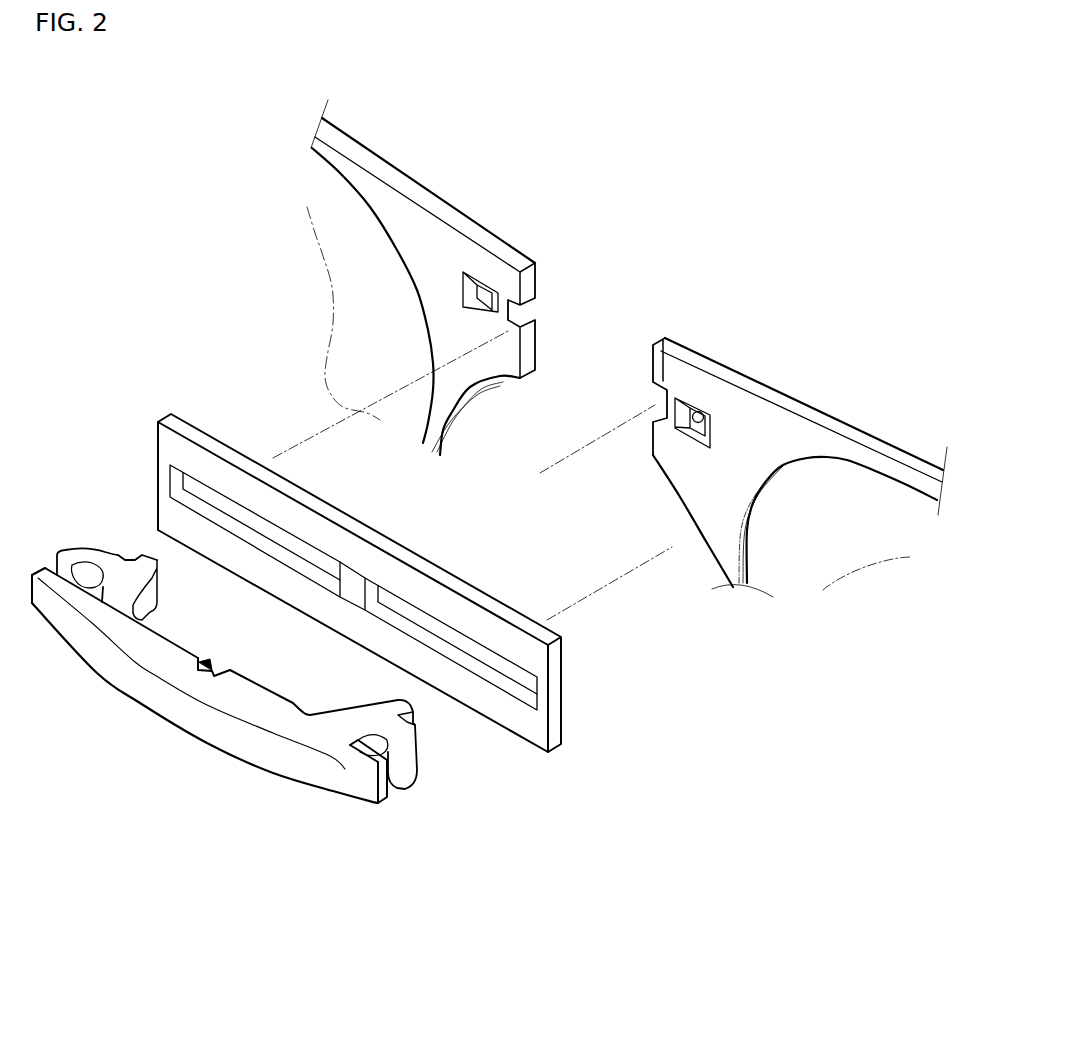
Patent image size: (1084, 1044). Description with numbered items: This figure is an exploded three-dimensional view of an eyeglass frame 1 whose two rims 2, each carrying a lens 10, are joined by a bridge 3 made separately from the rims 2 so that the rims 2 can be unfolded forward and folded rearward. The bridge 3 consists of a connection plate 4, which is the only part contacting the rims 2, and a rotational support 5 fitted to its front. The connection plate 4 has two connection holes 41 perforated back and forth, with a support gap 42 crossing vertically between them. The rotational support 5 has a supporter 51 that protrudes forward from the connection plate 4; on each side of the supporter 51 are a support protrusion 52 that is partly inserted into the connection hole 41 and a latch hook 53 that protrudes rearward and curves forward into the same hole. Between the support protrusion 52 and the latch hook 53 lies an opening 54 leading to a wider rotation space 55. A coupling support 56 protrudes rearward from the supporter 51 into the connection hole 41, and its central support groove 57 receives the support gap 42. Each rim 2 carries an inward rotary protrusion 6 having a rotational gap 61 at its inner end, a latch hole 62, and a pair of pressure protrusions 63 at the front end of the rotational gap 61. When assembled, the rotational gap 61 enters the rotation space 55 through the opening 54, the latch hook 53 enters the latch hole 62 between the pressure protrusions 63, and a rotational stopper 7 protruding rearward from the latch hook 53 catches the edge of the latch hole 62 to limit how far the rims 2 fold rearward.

The eyeglass frame 1 is at (694, 150).
The rim 2 is at (377, 167).
The bridge 3 is at (455, 930).
The connection plate 4 is at (535, 775).
The rotational support 5 is at (400, 822).
The rotary protrusion 6 is at (530, 230).
The rotational stopper 7 is at (161, 562).
The lens 10 is at (330, 240).
The connection hole 41 is at (222, 507).
The support gap 42 is at (355, 588).
The supporter 51 is at (230, 735).
The support protrusion 52 is at (63, 580).
The latch hook 53 is at (78, 556).
The opening 54 is at (45, 568).
The rotation space 55 is at (92, 573).
The coupling support 56 is at (185, 658).
The support groove 57 is at (233, 688).
The rotational gap 61 is at (510, 315).
The latch hole 62 is at (466, 298).
The pressure protrusion 63 is at (527, 277).